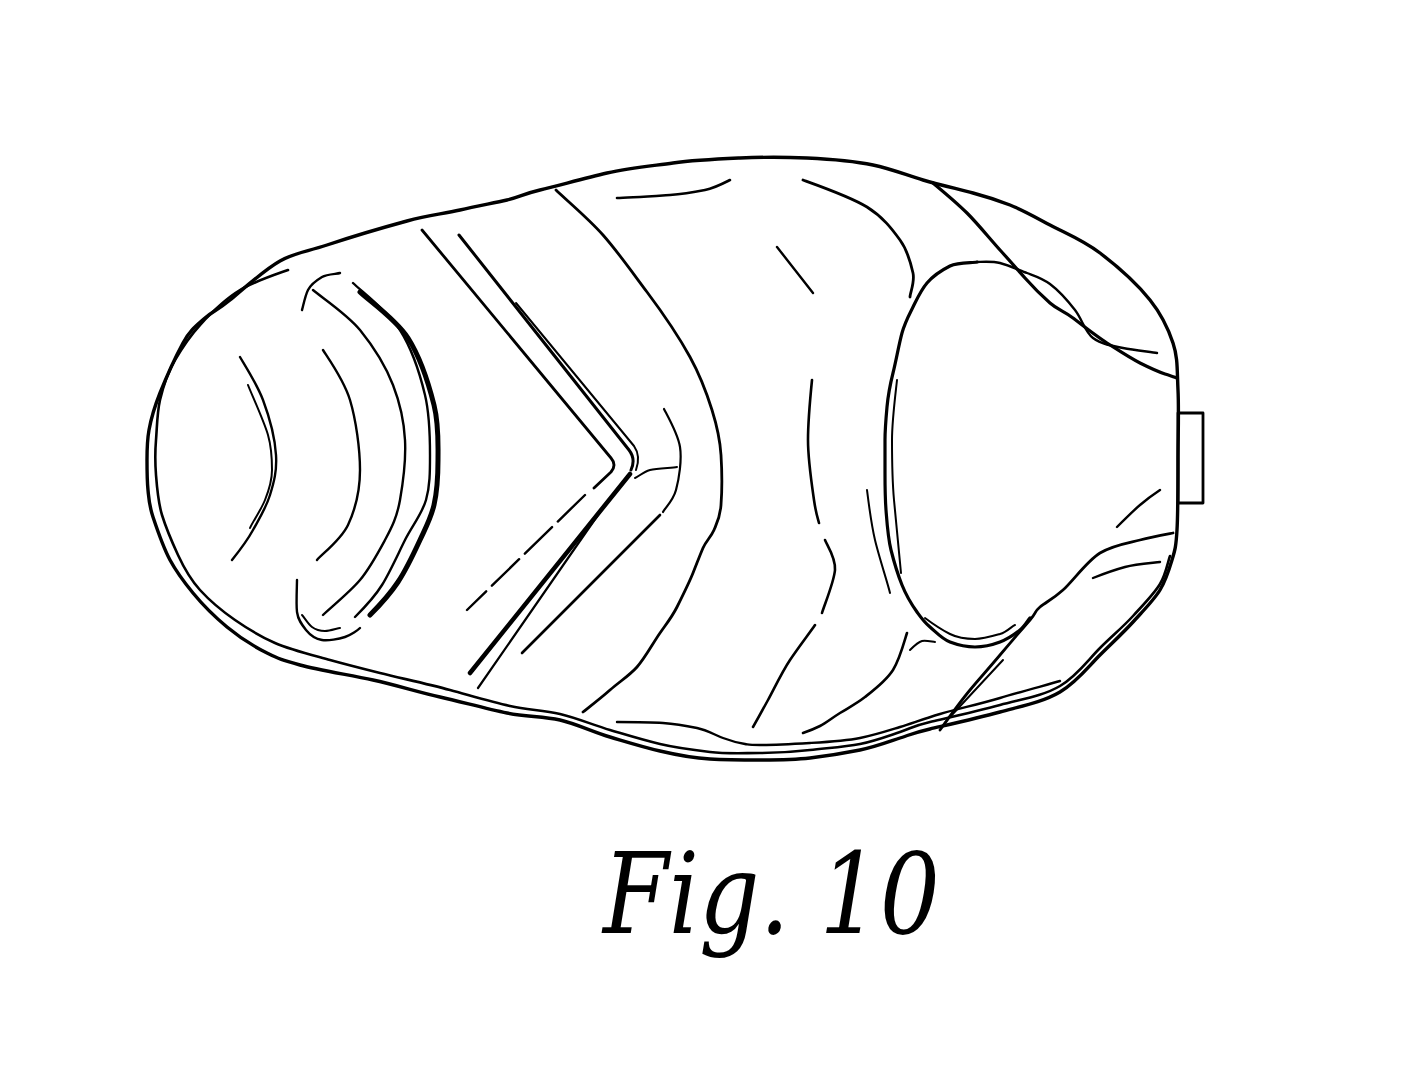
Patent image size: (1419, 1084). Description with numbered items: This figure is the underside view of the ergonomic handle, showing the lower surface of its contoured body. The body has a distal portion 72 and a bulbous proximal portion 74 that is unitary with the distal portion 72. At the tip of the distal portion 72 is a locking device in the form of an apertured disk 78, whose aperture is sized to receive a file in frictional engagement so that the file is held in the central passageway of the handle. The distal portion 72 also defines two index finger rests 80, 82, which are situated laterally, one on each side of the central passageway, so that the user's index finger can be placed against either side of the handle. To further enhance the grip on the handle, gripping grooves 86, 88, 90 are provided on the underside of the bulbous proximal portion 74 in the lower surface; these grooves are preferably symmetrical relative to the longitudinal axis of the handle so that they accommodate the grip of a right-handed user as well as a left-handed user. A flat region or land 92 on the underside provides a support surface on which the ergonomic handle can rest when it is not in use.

The distal portion 72 is at (1180, 280).
The bulbous proximal portion 74 is at (198, 650).
The apertured disk 78 is at (1193, 440).
The index finger rest 80 is at (1073, 277).
The index finger rest 82 is at (1090, 627).
The gripping groove 86 is at (548, 252).
The gripping groove 88 is at (397, 620).
The gripping groove 90 is at (270, 337).
The flat region or land 92 is at (1029, 488).